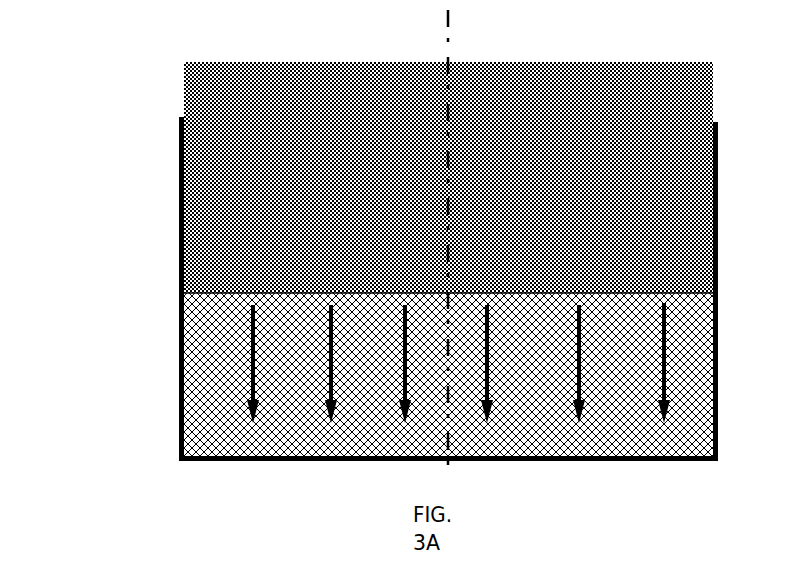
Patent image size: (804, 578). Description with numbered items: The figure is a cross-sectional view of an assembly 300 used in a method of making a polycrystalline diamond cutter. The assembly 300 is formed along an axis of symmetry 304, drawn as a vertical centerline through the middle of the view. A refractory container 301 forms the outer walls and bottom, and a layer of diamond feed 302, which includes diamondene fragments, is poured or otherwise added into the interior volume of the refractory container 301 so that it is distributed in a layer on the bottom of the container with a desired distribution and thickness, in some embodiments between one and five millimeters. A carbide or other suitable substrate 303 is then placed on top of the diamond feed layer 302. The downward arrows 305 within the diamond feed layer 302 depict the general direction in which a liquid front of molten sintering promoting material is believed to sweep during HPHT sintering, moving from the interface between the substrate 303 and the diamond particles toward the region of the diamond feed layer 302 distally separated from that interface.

The assembly 300 is at (138, 146).
The refractory container 301 is at (178, 280).
The diamond feed layer 302 is at (207, 412).
The substrate 303 is at (240, 223).
The axis of symmetry 304 is at (440, 39).
The arrows 305 is at (604, 392).